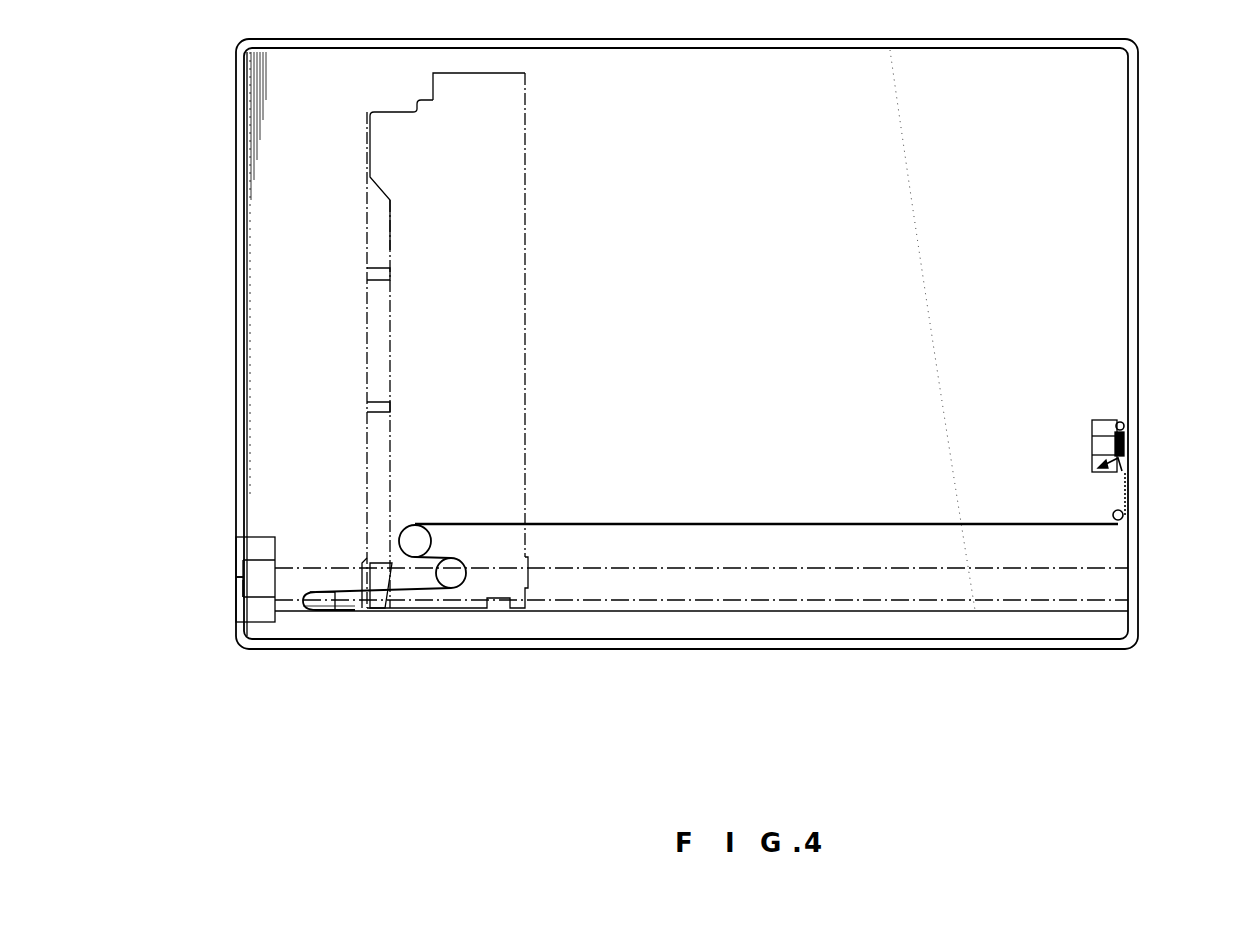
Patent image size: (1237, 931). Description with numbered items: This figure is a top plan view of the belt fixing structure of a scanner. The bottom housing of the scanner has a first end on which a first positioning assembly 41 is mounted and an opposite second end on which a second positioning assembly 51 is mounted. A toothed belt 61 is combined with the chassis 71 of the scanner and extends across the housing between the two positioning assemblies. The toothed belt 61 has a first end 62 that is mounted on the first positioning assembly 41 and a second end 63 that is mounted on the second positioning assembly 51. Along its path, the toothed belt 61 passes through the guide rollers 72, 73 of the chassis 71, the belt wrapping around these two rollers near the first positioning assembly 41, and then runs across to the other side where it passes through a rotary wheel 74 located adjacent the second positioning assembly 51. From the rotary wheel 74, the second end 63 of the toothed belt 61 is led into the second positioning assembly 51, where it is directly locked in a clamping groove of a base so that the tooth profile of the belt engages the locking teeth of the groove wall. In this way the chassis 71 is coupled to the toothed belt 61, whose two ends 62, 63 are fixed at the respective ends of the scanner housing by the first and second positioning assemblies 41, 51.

The first positioning assembly 41 is at (316, 615).
The second positioning assembly 51 is at (1108, 409).
The toothed belt 61 is at (812, 526).
The first end 62 is at (348, 612).
The second end 63 is at (1122, 470).
The chassis 71 is at (390, 370).
The guide roller 72 is at (449, 575).
The guide roller 73 is at (412, 541).
The rotary wheel 74 is at (1128, 522).